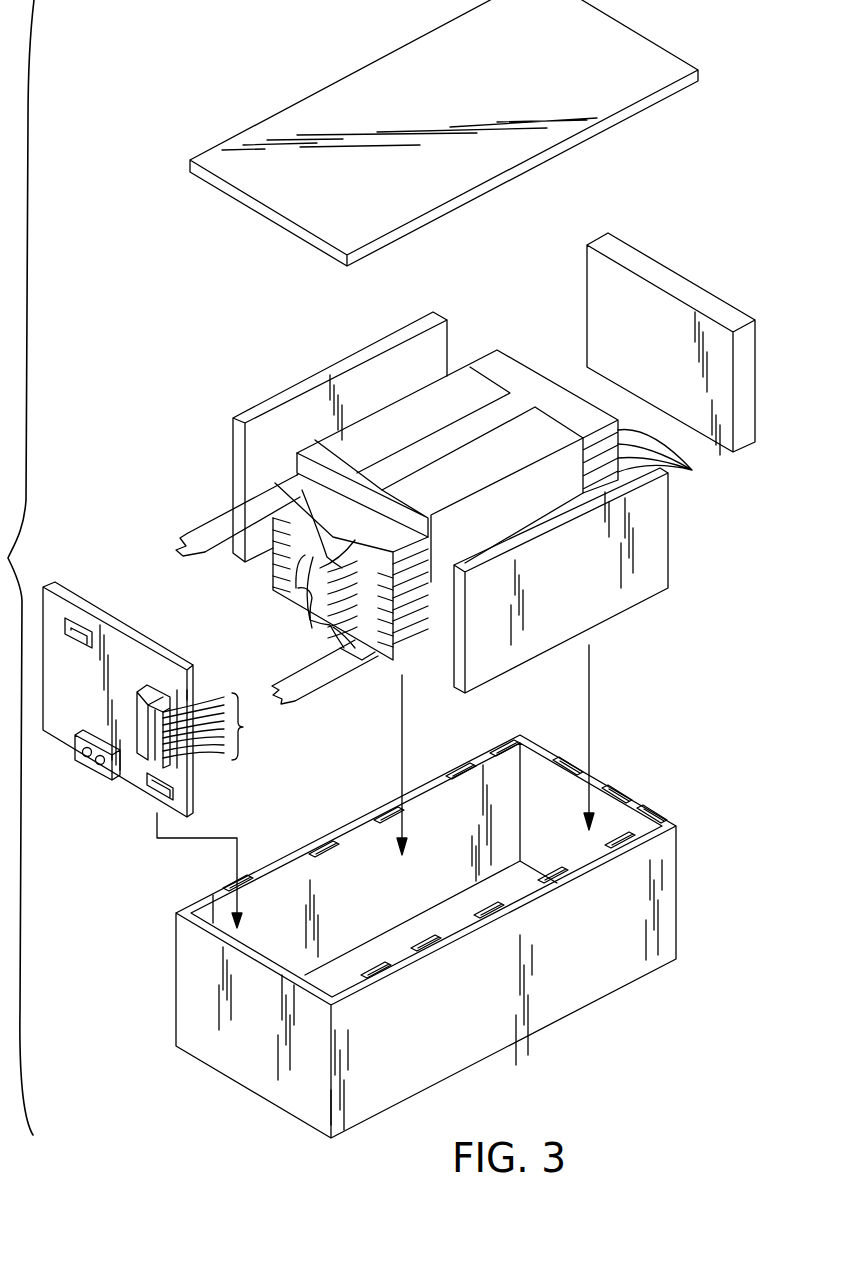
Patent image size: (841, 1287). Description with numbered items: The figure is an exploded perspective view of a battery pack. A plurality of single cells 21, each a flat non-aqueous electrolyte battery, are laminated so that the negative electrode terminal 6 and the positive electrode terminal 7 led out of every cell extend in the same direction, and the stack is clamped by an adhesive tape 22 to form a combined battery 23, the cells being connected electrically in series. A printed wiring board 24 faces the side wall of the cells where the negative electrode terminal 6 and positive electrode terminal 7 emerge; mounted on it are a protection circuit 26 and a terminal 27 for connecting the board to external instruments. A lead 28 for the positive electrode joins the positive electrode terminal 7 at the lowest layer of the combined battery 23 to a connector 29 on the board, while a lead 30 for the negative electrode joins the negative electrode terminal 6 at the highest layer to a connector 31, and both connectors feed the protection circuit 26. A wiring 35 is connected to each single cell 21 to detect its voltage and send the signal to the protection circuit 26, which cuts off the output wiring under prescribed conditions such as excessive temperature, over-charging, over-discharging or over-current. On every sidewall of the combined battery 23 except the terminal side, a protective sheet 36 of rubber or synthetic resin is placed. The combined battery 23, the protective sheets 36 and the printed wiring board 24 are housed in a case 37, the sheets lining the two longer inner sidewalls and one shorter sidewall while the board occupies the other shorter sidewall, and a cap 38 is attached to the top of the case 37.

The negative electrode terminal 6 is at (295, 477).
The positive electrode terminal 7 is at (378, 524).
The single cells 21 is at (690, 470).
The adhesive tape 22 is at (525, 440).
The combined battery 23 is at (388, 405).
The printed wiring board 24 is at (78, 585).
The protection circuit 26 is at (152, 690).
The terminal 27 is at (100, 772).
The lead for the positive electrode 28 is at (318, 688).
The connector for the positive terminal 29 is at (178, 790).
The lead for the negative electrode 30 is at (200, 522).
The connector for the negative terminal 31 is at (83, 632).
The wiring 35 is at (293, 588).
The protective sheet 36 is at (303, 385).
The case 37 is at (673, 895).
The cap 38 is at (637, 53).